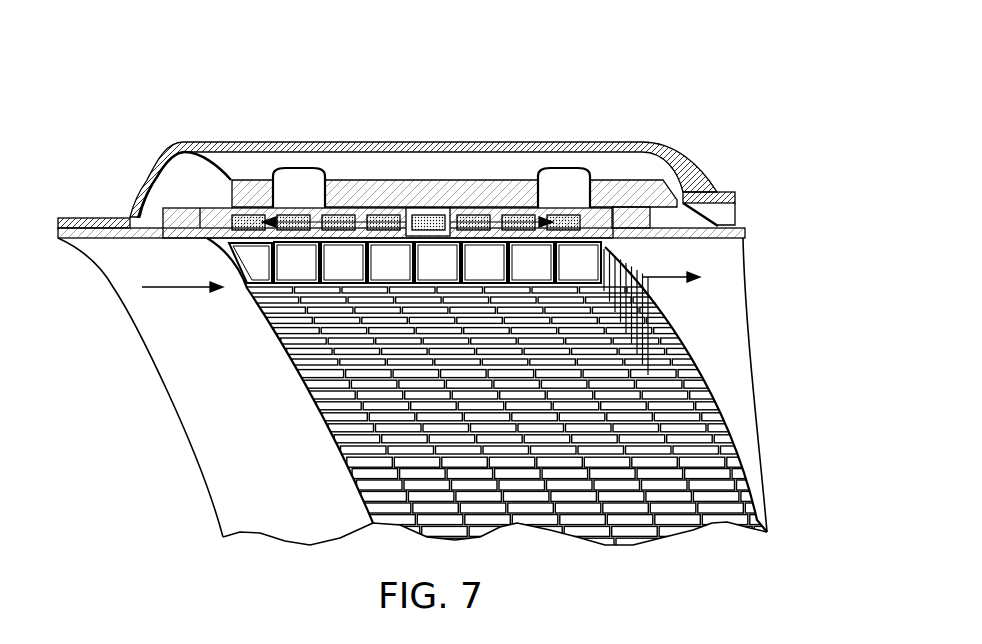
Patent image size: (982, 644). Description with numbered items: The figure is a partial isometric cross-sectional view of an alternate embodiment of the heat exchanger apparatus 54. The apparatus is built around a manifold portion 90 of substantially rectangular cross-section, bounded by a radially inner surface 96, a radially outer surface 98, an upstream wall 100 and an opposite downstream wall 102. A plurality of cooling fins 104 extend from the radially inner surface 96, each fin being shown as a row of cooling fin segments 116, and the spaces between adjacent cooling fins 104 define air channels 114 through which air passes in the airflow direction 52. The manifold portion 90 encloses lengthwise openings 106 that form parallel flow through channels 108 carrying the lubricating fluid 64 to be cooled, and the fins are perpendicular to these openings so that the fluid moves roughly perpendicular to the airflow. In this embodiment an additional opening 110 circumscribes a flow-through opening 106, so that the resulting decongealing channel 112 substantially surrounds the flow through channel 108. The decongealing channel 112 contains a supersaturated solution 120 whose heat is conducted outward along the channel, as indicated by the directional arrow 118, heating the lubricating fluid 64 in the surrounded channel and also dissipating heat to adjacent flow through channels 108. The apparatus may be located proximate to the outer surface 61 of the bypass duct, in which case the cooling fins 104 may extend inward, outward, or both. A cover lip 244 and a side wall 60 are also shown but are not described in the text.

The airflow direction 52 is at (746, 481).
The heat exchanger apparatus 54 is at (113, 143).
The outlet side wall 60 is at (726, 240).
The outer surface of the bypass duct 61 is at (90, 256).
The lubricating fluid 64 is at (577, 263).
The manifold portion 90 is at (213, 200).
The radially inner surface 96 is at (421, 273).
The radially outer surface 98 is at (438, 208).
The upstream wall 100 is at (163, 243).
The downstream wall 102 is at (640, 242).
The cooling fins 104 is at (250, 288).
The opening 106 is at (390, 200).
The flow through channel 108 is at (247, 200).
The additional opening 110 is at (425, 210).
The decongealing channel 112 is at (428, 222).
The air channels 114 is at (697, 367).
The cooling fin segments 116 is at (415, 262).
The directional arrow 118 is at (300, 193).
The supersaturated solution 120 is at (436, 266).
The cover lip 244 is at (650, 162).